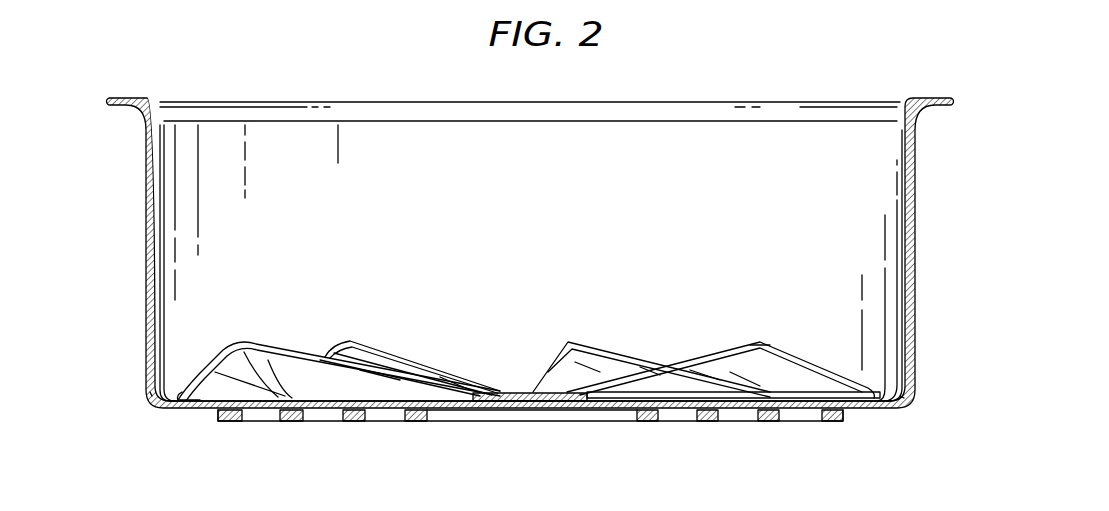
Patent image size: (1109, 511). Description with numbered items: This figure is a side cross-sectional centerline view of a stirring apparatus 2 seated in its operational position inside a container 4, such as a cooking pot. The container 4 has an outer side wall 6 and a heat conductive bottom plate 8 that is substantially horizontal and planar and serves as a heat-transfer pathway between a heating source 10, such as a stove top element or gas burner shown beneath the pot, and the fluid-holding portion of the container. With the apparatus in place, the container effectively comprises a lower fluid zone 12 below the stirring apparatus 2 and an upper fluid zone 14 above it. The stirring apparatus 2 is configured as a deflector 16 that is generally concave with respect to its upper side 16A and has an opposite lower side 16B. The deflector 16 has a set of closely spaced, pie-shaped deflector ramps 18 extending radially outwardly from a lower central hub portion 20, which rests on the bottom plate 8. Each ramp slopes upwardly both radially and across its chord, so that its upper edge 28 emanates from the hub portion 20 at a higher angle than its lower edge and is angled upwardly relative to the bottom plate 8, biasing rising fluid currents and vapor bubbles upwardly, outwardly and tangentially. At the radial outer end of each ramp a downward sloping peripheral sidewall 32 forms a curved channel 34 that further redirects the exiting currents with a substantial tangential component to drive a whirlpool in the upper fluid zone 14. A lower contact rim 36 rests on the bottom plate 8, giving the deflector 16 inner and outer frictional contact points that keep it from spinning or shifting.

The stirring apparatus 2 is at (792, 385).
The container 4 is at (892, 110).
The outer side wall 6 is at (146, 217).
The heat conductive bottom plate 8 is at (267, 403).
The heating source 10 is at (357, 422).
The lower fluid zone 12 is at (209, 405).
The upper fluid zone 14 is at (186, 314).
The deflector structure 16 is at (870, 384).
The upper side 16A is at (762, 342).
The lower side 16B is at (615, 398).
The deflector ramp 18 is at (302, 383).
The central hub portion 20 is at (510, 393).
The upper edge 28 is at (245, 342).
The peripheral sidewall 32 is at (185, 378).
The curved channel 34 is at (192, 411).
The lower contact rim 36 is at (150, 391).